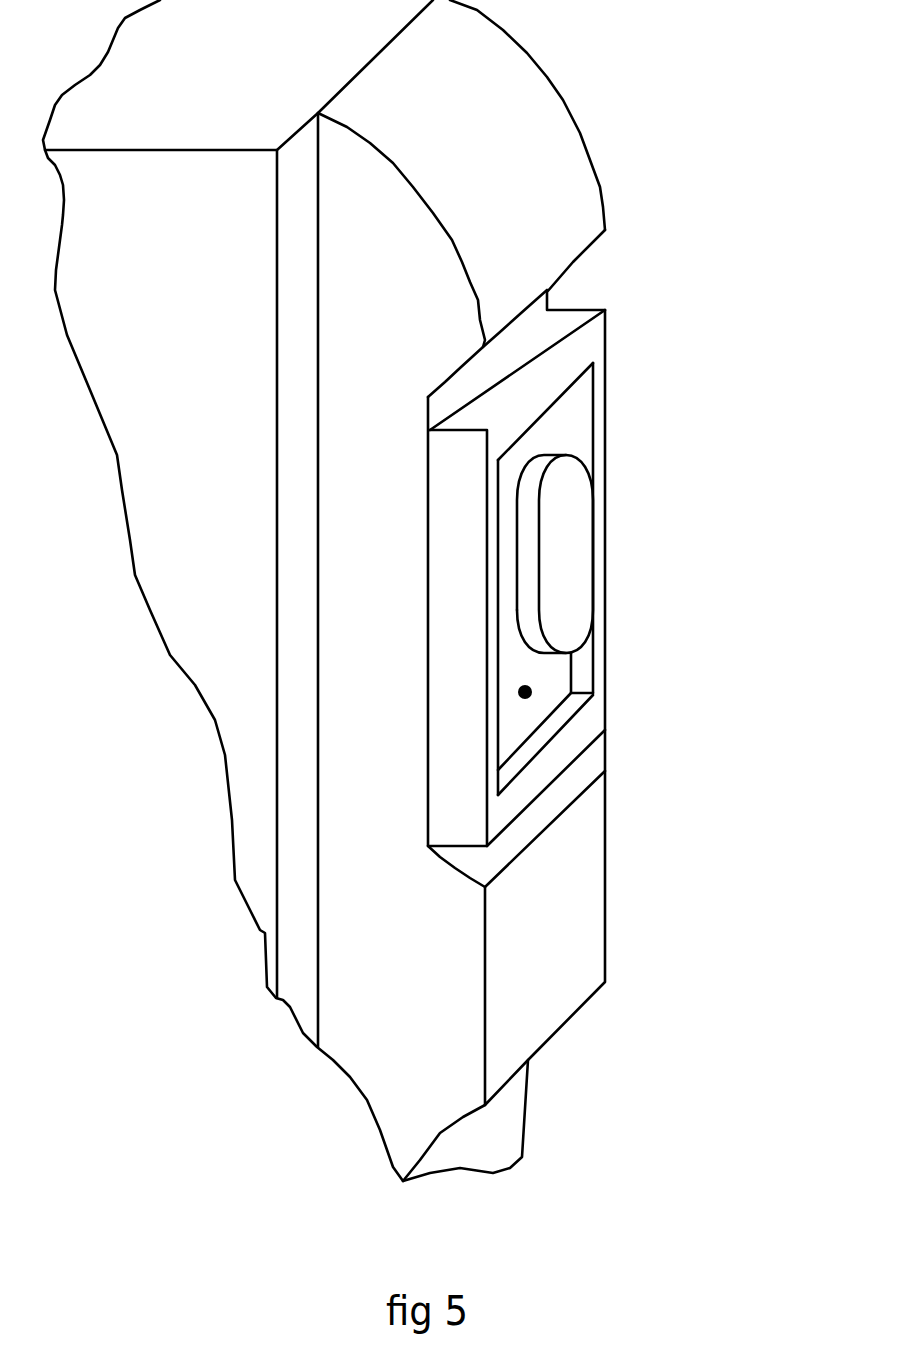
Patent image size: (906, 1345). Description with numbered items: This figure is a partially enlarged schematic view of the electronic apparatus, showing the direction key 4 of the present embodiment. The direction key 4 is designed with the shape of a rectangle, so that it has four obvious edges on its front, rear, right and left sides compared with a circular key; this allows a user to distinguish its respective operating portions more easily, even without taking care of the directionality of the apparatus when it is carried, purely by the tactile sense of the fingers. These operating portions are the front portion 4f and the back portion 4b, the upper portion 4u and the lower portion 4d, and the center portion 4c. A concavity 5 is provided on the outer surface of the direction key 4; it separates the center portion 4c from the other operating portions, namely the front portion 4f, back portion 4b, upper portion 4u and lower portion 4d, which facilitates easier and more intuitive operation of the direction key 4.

The direction key 4 is at (567, 611).
The upper portion 4u is at (567, 378).
The back portion 4b is at (560, 543).
The center portion 4c is at (560, 562).
The lower portion 4d is at (542, 737).
The front portion 4f is at (498, 537).
The concavity 5 is at (531, 696).